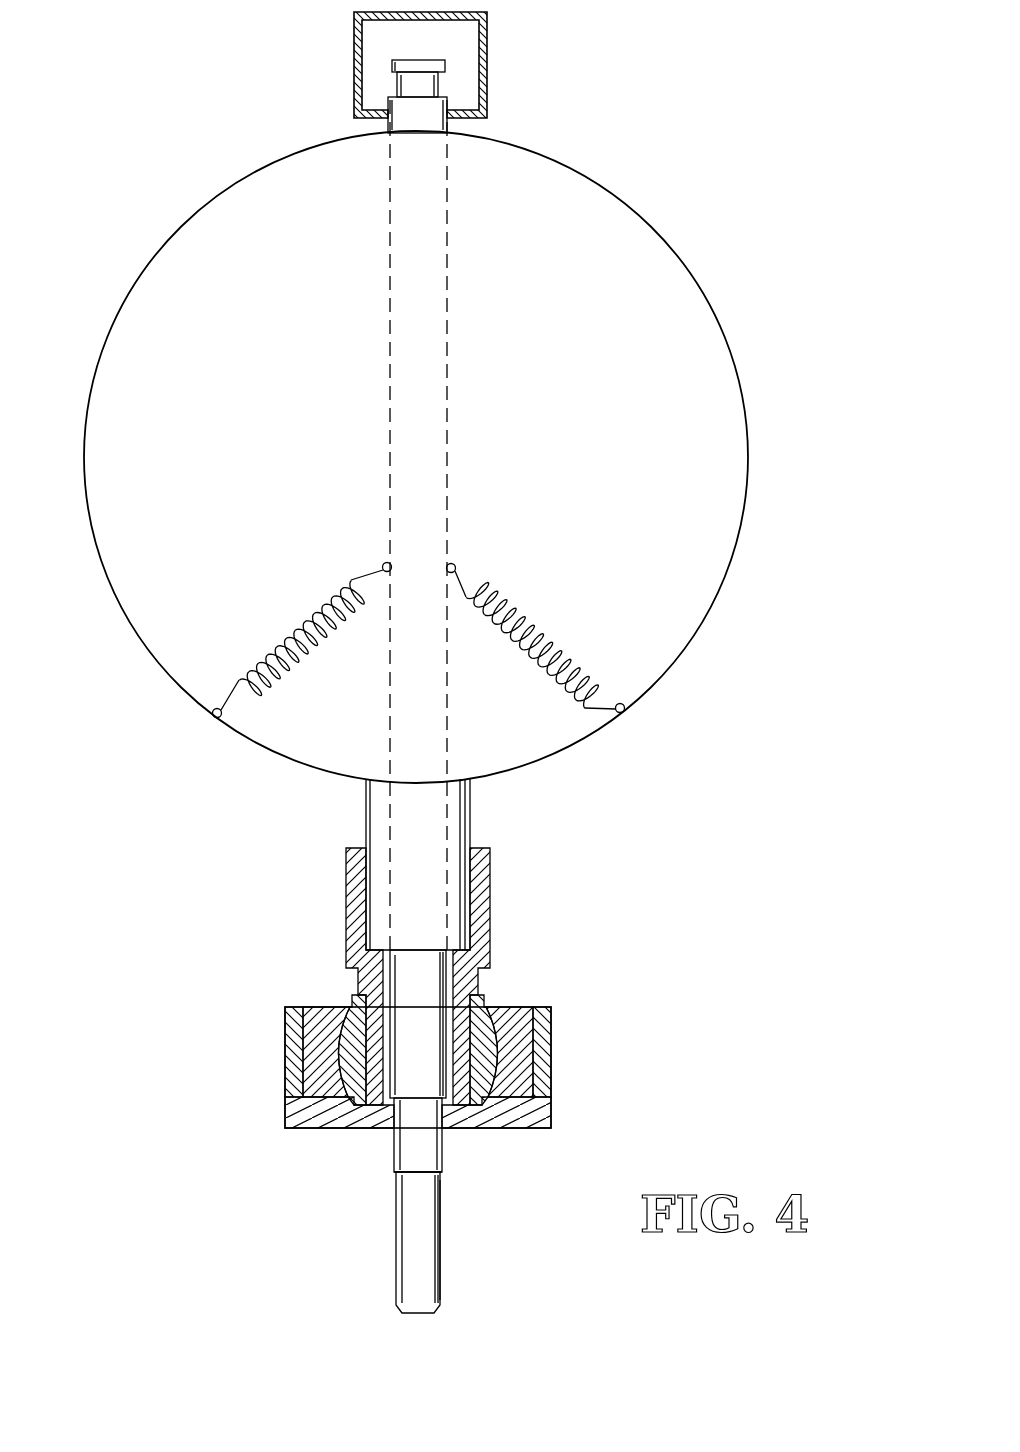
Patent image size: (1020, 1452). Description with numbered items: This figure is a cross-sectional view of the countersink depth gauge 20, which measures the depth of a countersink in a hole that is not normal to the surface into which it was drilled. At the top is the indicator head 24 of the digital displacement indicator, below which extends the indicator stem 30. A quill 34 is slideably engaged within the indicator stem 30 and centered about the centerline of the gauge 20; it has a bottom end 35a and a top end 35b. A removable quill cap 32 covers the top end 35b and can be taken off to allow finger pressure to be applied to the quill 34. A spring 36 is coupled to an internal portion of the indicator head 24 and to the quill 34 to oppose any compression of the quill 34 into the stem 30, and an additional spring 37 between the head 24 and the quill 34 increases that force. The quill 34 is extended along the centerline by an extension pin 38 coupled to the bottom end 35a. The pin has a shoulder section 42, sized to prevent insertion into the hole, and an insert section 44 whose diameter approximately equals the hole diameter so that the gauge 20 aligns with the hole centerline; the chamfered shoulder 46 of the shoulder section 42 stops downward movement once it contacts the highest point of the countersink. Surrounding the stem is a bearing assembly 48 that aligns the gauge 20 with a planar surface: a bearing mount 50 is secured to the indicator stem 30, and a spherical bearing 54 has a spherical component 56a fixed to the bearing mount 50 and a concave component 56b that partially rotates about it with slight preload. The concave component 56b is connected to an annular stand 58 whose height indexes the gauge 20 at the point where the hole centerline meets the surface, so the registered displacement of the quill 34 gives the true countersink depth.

The countersink depth gauge 20 is at (105, 262).
The indicator head 24 is at (744, 546).
The indicator stem 30 is at (364, 812).
The removable quill cap 32 is at (492, 50).
The quill 34 is at (450, 463).
The bottom end of quill 35a is at (386, 978).
The top end of quill 35b is at (452, 97).
The spring 36 is at (320, 610).
The additional spring 37 is at (550, 628).
The extension pin 38 is at (392, 1243).
The shoulder section 42 is at (448, 1150).
The insert section 44 is at (444, 1277).
The shoulder 46 is at (445, 1172).
The bearing assembly 48 is at (496, 988).
The bearing mount 50 is at (493, 920).
The spherical bearing 54 is at (525, 992).
The spherical component 56a is at (345, 1003).
The concave component 56b is at (297, 1010).
The annular stand 58 is at (553, 1108).